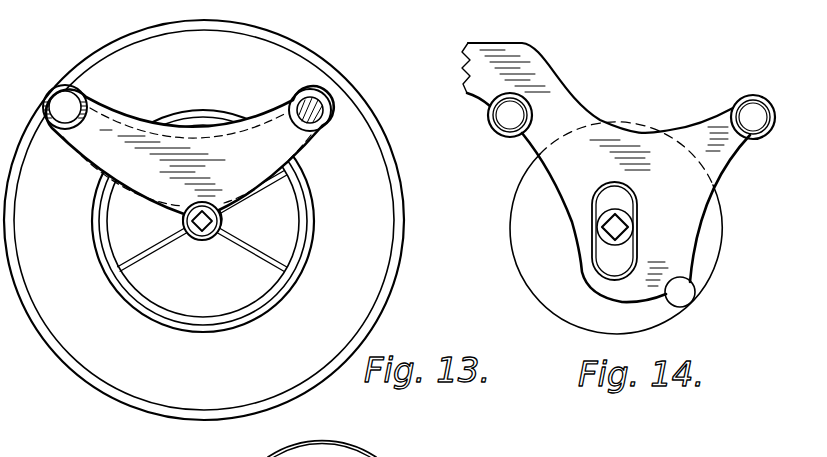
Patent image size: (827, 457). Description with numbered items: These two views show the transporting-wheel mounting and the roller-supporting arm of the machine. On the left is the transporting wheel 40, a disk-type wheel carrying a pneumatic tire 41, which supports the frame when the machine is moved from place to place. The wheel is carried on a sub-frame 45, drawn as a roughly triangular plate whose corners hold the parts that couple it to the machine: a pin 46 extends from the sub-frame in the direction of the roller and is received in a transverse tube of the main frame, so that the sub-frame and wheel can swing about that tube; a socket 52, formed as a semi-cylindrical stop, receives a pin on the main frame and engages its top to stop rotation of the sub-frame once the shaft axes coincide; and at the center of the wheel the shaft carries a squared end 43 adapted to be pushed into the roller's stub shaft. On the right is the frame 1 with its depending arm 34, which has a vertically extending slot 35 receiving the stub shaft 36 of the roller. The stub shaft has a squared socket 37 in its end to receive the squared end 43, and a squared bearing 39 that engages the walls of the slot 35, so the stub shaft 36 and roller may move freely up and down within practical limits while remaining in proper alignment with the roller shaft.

In FIG. 13, the pneumatic tire 41 is at (389, 152).
In FIG. 13, the transporting wheel 40 is at (285, 241).
In FIG. 13, the sub-frame 45 is at (132, 138).
In FIG. 13, the socket 52 is at (66, 85).
In FIG. 13, the pin 46 is at (303, 101).
In FIG. 13, the squared end 43 is at (223, 215).
In FIG. 14, the frame 1 is at (480, 56).
In FIG. 14, the depending arm 34 is at (632, 140).
In FIG. 14, the squared bearing 39 is at (605, 190).
In FIG. 14, the vertically extending slot 35 is at (618, 192).
In FIG. 14, the stub shaft 36 is at (626, 222).
In FIG. 14, the squared socket 37 is at (618, 229).